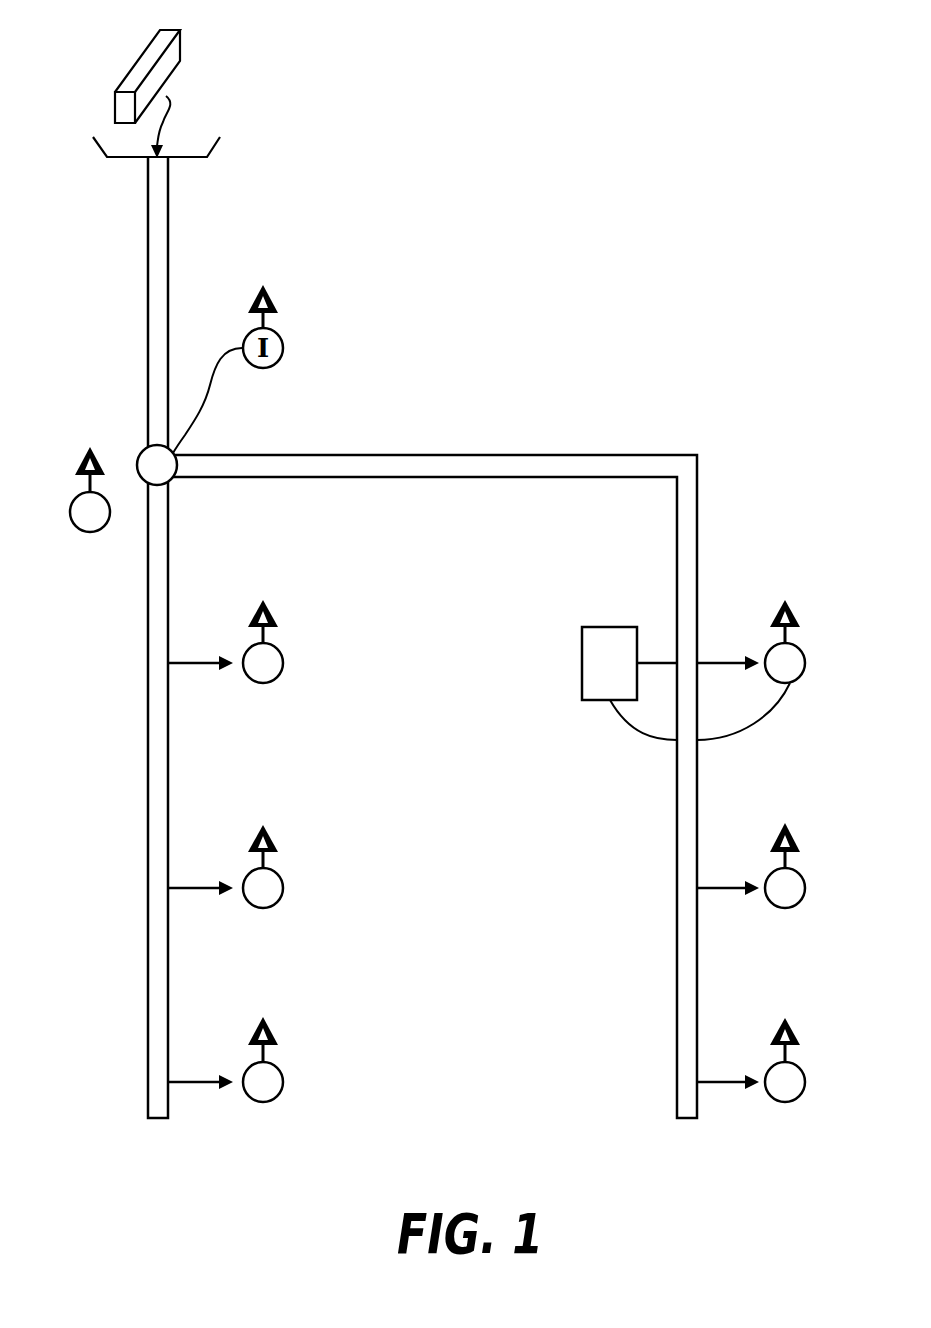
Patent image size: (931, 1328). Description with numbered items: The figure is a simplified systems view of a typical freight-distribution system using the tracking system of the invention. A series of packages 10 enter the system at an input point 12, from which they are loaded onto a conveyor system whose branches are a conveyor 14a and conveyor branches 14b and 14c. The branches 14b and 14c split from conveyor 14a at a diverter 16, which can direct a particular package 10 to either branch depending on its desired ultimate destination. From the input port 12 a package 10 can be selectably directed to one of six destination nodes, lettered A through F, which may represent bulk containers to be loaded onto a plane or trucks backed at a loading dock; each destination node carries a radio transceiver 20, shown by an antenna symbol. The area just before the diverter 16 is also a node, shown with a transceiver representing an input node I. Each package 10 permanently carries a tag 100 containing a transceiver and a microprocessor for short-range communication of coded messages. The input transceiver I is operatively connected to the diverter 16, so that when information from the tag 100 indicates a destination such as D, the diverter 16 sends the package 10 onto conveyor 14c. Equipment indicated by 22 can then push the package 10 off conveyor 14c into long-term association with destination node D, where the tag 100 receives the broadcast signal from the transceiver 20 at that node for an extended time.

The package 10 is at (123, 75).
The tag 100 is at (173, 53).
The input point 12 is at (190, 160).
The conveyor 14a is at (148, 285).
The conveyor branch 14b is at (148, 685).
The conveyor branch 14c is at (402, 455).
The diverter 16 is at (158, 484).
The radio transceiver 20 is at (277, 647).
The pusher 22 is at (608, 625).